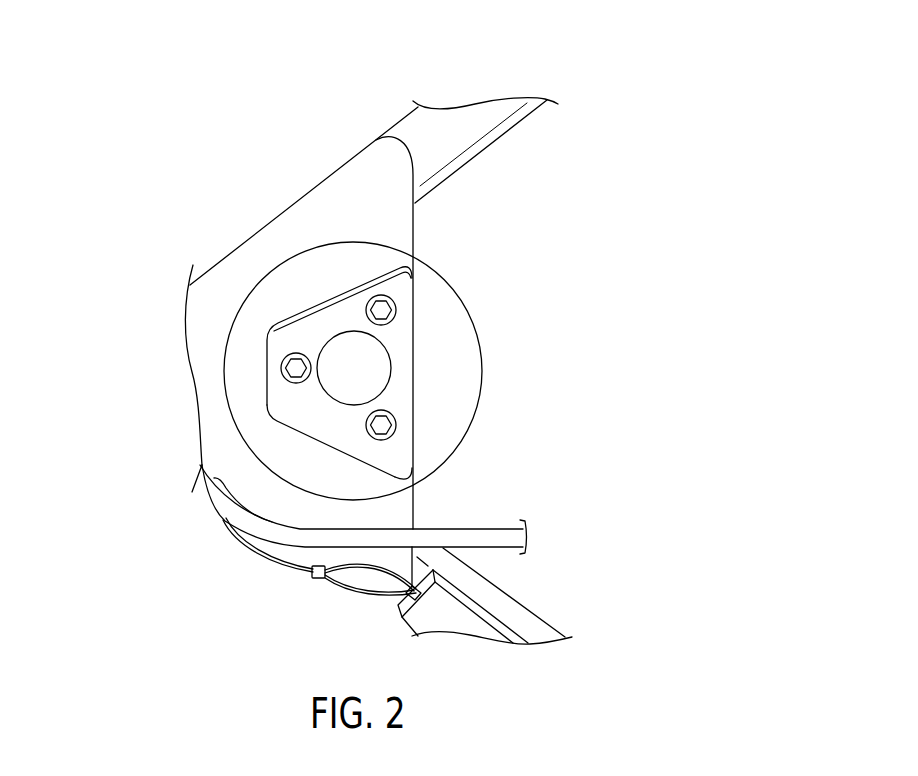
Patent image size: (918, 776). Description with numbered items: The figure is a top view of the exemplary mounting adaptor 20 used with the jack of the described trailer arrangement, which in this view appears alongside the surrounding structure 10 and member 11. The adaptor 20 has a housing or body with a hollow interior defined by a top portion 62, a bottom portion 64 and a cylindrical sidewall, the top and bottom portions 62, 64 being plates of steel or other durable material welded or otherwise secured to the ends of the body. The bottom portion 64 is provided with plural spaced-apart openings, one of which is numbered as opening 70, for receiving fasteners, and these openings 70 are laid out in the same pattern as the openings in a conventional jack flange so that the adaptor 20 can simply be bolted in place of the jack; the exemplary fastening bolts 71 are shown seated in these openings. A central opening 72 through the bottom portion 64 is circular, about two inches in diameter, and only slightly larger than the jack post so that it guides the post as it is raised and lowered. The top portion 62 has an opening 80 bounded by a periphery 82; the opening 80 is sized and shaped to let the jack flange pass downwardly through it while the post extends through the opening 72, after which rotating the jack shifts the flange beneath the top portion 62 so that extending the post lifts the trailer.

The firearm / rail assembly 10 is at (258, 209).
The handguard strut 11 is at (310, 212).
The mounting adaptor 20 is at (339, 371).
The top portion 62 is at (467, 337).
The bottom portion 64 is at (376, 376).
The openings 70 is at (363, 305).
The fastening bolts 71 is at (387, 313).
The opening 72 is at (381, 367).
The opening 80 is at (375, 452).
The periphery 82 is at (402, 446).